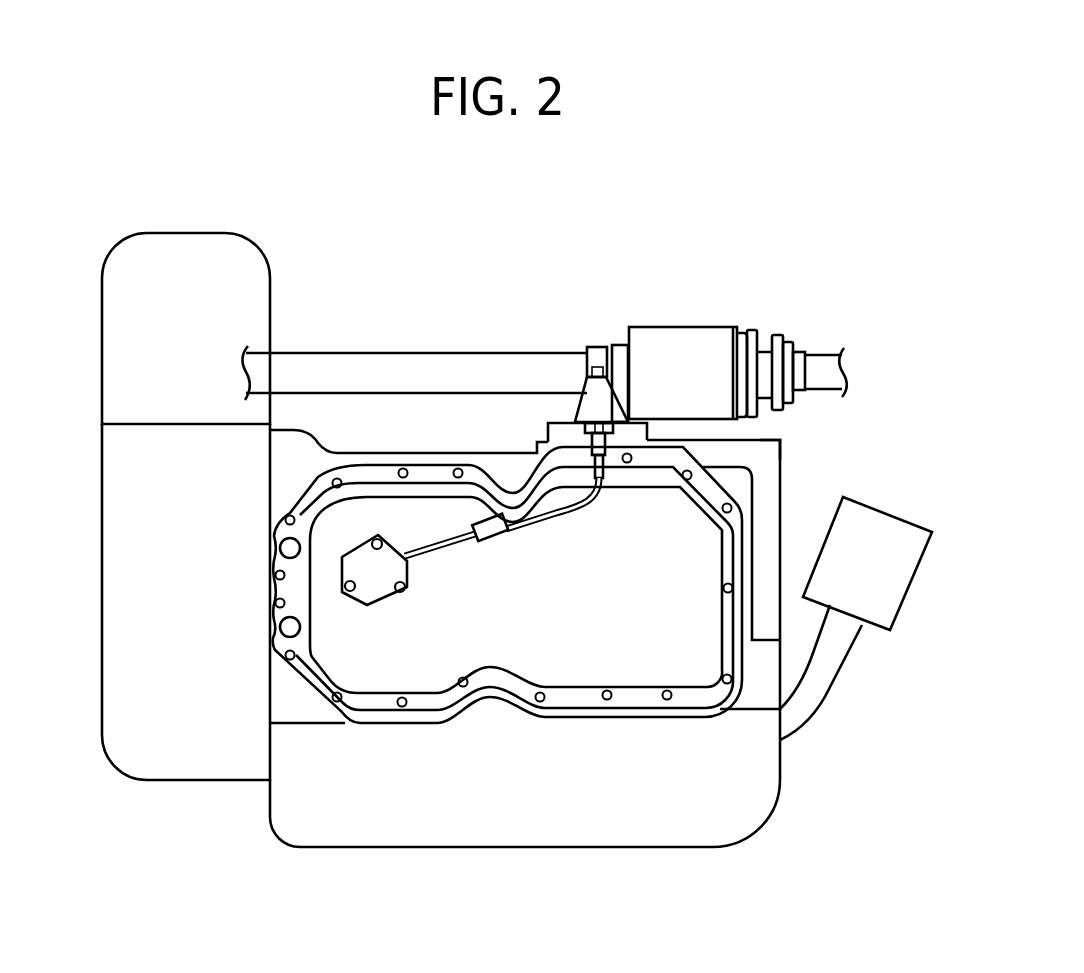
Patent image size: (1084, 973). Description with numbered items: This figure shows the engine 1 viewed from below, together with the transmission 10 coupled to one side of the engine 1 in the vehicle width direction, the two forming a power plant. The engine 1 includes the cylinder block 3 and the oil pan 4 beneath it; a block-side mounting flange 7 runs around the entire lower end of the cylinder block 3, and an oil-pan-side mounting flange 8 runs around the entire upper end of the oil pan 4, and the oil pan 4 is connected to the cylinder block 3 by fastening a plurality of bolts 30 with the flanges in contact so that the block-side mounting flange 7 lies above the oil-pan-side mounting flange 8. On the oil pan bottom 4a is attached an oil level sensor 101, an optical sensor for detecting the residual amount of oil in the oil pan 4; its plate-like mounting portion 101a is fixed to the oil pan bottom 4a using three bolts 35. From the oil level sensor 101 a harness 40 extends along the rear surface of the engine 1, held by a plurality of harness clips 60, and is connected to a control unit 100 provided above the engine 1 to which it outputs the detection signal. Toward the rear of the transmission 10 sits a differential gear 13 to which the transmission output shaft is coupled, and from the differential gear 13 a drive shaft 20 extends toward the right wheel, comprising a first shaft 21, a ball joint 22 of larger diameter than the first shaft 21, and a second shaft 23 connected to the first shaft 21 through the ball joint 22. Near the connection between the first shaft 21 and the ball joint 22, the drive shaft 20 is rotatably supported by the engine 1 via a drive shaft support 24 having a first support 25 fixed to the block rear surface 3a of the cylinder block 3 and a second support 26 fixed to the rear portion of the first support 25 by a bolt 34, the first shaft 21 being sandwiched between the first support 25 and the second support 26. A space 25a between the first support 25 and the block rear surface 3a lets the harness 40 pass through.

The engine 1 is at (778, 856).
The cylinder block 3 is at (768, 787).
The block rear surface 3a is at (765, 440).
The oil pan 4 is at (514, 588).
The oil pan bottom 4a is at (633, 626).
The block-side mounting flange 7 is at (745, 485).
The oil-pan-side mounting flange 8 is at (698, 697).
The transmission 10 is at (112, 601).
The differential gear 13 is at (112, 351).
The drive shaft 20 is at (571, 324).
The first shaft 21 is at (314, 360).
The ball joint 22 is at (700, 335).
The second shaft 23 is at (827, 367).
The drive shaft support 24 is at (538, 355).
The first support 25 is at (574, 405).
The space 25a is at (613, 427).
The second support 26 is at (602, 345).
The bolts 30 is at (340, 705).
The bolt 34 is at (588, 363).
The bolts 35 is at (379, 539).
The harness 40 is at (578, 497).
The harness clips 60 is at (492, 540).
The control unit 100 is at (903, 578).
The oil level sensor 101 is at (400, 605).
The mounting portion 101a is at (377, 597).